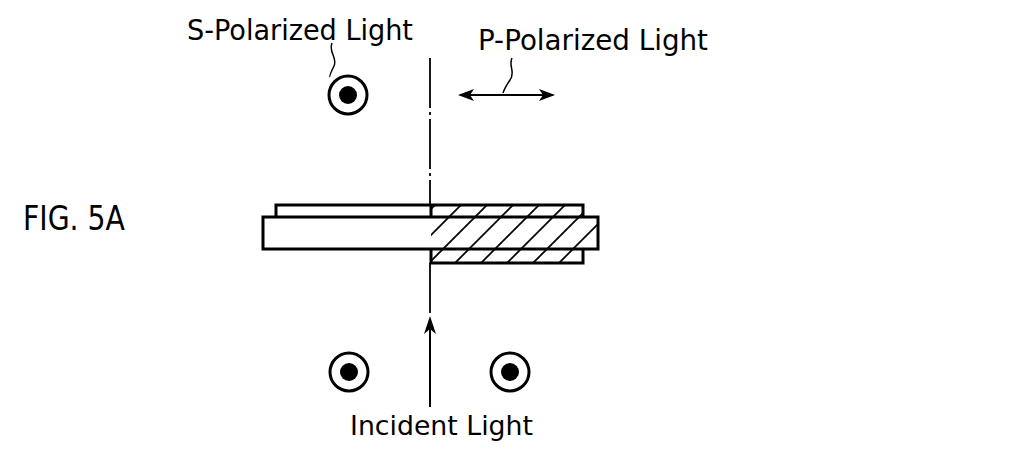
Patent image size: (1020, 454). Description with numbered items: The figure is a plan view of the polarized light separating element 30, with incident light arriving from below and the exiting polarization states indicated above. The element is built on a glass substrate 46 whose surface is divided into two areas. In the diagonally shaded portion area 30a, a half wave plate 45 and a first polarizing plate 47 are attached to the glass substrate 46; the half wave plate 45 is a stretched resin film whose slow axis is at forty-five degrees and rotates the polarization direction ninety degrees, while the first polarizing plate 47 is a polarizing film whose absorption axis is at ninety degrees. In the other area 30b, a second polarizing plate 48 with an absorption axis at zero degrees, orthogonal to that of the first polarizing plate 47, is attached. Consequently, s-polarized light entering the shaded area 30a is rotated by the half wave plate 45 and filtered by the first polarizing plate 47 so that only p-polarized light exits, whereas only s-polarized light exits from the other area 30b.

The polarized light separating element 30 is at (448, 243).
The diagonally shaded portion area 30a is at (529, 244).
The other area 30b is at (350, 243).
The half wave plate 45 is at (562, 258).
The glass substrate 46 is at (596, 233).
The first polarizing plate 47 is at (540, 207).
The second polarizing plate 48 is at (296, 204).